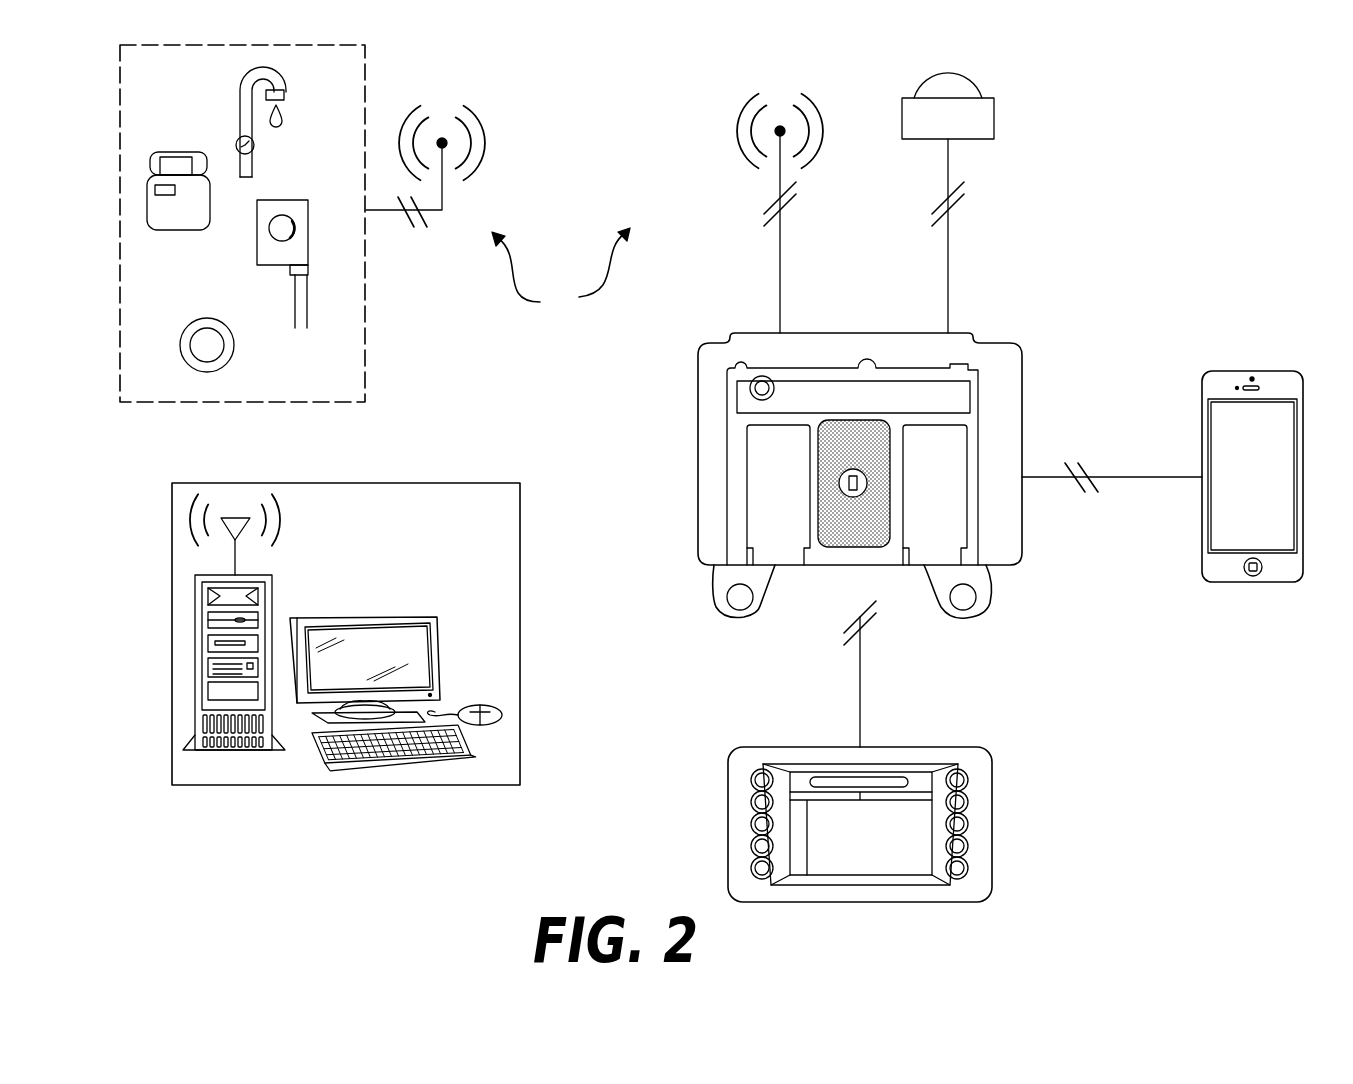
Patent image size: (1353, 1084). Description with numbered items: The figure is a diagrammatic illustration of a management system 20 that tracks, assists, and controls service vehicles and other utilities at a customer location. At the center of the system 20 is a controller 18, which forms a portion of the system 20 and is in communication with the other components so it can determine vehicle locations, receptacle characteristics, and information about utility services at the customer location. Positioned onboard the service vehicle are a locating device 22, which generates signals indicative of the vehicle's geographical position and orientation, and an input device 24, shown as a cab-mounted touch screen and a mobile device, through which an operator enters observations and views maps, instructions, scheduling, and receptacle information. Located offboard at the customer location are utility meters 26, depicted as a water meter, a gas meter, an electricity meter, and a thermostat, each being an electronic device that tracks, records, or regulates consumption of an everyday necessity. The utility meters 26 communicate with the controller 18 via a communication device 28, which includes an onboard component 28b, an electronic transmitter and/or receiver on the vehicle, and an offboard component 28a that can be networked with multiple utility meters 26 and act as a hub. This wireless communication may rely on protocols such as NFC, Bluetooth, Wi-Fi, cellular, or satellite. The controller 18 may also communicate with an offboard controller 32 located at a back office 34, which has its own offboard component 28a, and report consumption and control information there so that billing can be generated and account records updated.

The controller 18 is at (1020, 343).
The management system 20 is at (1143, 166).
The locating device 22 is at (960, 132).
The input device 24 is at (1264, 489).
The utility meter 26 is at (366, 65).
The communication device 28 is at (561, 276).
The offboard component 28a is at (442, 203).
The onboard component 28b is at (780, 290).
The offboard controller 32 is at (272, 598).
The back office 34 is at (310, 634).